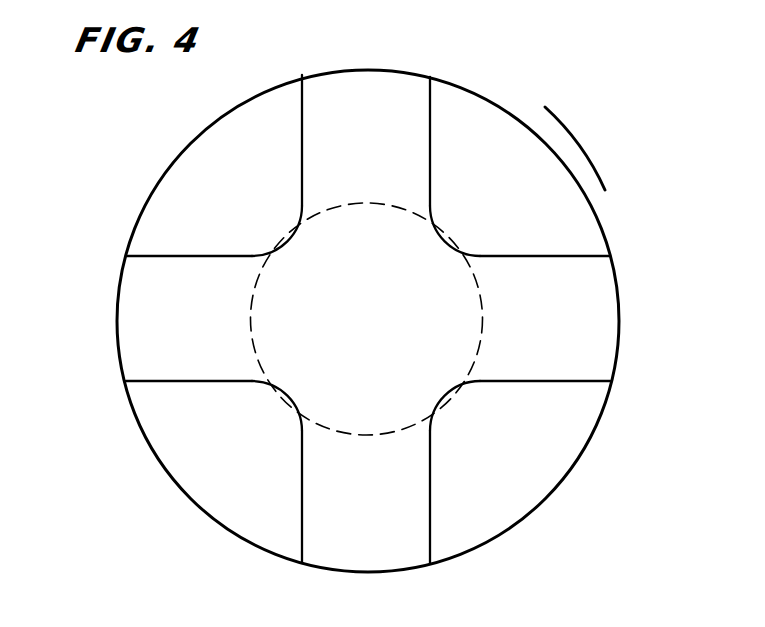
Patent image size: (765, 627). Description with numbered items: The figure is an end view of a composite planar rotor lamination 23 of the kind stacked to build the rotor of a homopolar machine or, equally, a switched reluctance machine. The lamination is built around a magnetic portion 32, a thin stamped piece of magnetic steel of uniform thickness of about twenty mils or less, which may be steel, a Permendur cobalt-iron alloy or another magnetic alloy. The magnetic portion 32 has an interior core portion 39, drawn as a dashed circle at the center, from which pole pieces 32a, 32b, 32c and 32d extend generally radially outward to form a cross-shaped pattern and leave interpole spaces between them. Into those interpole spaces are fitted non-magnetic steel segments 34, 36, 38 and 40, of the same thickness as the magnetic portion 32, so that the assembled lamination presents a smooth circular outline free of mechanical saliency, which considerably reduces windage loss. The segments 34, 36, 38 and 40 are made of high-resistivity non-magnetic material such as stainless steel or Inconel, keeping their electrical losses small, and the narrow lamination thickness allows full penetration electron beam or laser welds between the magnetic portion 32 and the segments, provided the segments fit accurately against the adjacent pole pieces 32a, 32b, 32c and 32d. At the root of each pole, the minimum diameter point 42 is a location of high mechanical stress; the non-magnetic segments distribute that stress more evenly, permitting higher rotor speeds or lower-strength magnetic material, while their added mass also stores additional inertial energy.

The rotor lamination 23 is at (115, 141).
The magnetic portion 32 is at (364, 320).
The pole piece 32a is at (618, 283).
The pole piece 32b is at (383, 70).
The pole piece 32c is at (116, 310).
The pole piece 32d is at (362, 571).
The non-magnetic steel segment 34 is at (555, 488).
The non-magnetic steel segment 36 is at (578, 181).
The non-magnetic steel segment 38 is at (238, 132).
The interior core portion 39 is at (483, 356).
The non-magnetic steel segment 40 is at (200, 481).
The minimum diameter point 42 is at (283, 243).